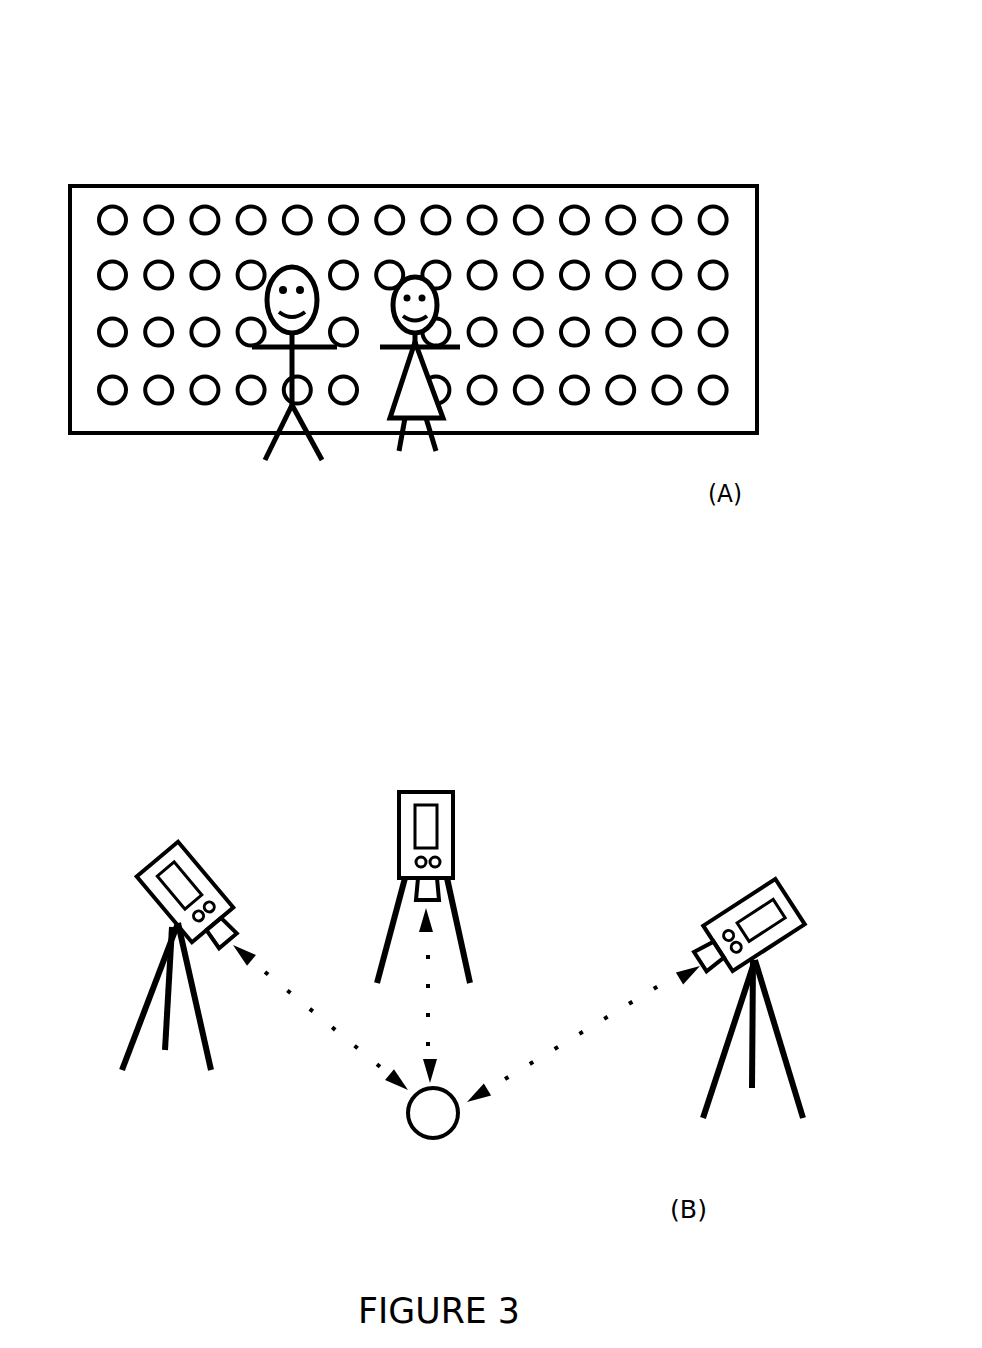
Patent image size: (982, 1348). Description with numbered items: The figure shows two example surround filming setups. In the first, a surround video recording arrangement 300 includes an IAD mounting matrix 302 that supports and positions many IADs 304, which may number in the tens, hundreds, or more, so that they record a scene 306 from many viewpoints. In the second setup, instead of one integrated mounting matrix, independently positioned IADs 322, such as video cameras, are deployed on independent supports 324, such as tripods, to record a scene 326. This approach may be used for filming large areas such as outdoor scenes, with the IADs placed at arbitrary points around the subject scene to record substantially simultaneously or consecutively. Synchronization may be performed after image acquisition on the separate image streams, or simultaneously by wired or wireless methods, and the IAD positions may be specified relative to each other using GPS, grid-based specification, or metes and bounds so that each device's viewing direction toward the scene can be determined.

In FIG. 3A, the surround video recording arrangement 300 is at (425, 106).
In FIG. 3A, the IAD mounting matrix 302 is at (173, 186).
In FIG. 3A, the IADs 304 is at (728, 270).
In FIG. 3A, the scene 306 is at (402, 448).
In FIG. 3B, the independently positioned IADs 322 is at (399, 846).
In FIG. 3B, the independent supports 324 is at (137, 1008).
In FIG. 3B, the scene 326 is at (419, 1136).